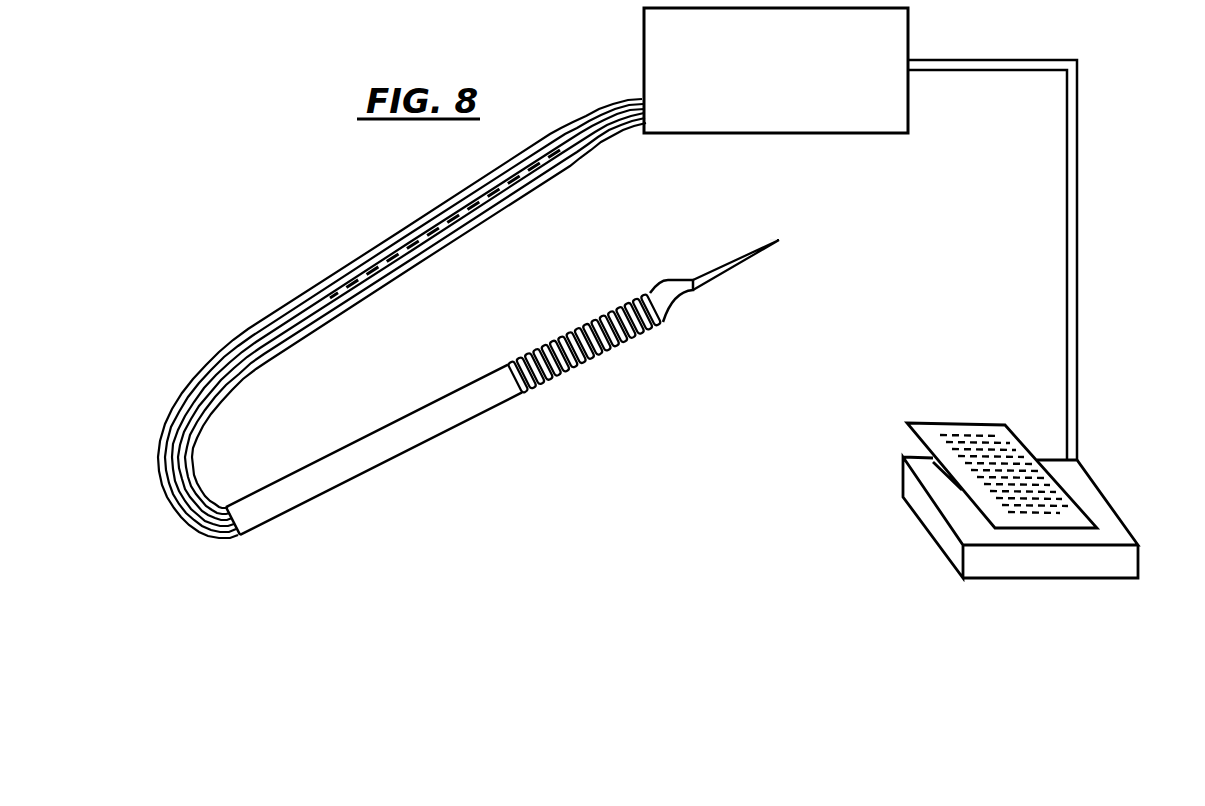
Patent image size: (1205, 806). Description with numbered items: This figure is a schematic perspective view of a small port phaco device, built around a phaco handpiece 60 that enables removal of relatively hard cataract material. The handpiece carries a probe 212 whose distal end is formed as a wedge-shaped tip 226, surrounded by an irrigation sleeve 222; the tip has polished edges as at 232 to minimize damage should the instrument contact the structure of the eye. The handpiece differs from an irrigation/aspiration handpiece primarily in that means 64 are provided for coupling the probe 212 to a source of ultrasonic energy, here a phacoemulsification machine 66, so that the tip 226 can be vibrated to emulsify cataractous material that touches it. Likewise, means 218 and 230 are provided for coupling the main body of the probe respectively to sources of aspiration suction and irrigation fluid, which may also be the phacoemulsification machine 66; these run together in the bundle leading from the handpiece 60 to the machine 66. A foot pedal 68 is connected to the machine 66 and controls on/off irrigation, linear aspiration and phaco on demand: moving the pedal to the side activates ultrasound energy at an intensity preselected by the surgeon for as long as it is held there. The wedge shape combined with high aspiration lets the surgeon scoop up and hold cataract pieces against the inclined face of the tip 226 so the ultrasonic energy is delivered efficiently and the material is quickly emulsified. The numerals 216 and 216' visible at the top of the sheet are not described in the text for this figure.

The phaco handpiece 60 is at (532, 427).
The means for coupling the probe to a source of ultrasonic energy 64 is at (458, 228).
The phacoemulsification machine 66 is at (776, 75).
The foot pedal 68 is at (1097, 472).
The probe 212 is at (747, 267).
The means for coupling the main body portion to a source of aspiration suction 218 is at (348, 270).
The irrigation sleeve 222 is at (701, 278).
The wedge-shaped tip 226 is at (780, 238).
The means for coupling the main body portion to a source of irrigation fluid 230 is at (396, 250).
The channel 216 is at (250, 12).
The polished edges 232 is at (362, 2).
The channel 216' is at (1153, 12).